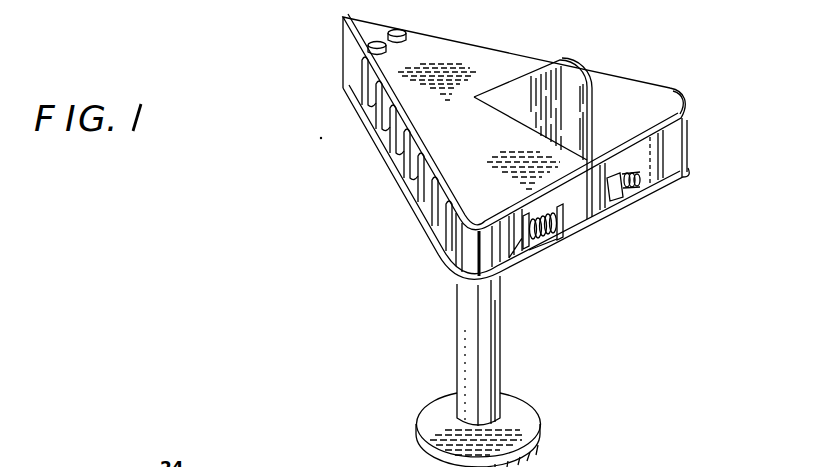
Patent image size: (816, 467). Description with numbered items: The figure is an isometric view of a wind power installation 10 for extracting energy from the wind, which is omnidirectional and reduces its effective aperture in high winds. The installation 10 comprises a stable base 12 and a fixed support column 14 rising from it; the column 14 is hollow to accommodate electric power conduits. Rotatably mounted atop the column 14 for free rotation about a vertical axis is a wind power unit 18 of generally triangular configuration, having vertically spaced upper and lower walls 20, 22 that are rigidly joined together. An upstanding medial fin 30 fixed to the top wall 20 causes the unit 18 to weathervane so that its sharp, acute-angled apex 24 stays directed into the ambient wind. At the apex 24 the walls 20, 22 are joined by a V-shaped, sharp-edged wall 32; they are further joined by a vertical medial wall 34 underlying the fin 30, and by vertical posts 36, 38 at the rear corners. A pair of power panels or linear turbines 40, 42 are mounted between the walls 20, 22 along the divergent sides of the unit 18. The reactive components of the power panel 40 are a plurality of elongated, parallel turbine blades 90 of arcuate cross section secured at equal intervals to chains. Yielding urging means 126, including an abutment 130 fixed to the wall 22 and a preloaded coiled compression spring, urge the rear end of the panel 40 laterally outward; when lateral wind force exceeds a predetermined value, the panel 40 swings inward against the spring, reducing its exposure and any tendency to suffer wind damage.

The wind power installation 10 is at (376, 232).
The stable base 12 is at (528, 430).
The fixed support column 14 is at (497, 367).
The wind power unit 18 is at (518, 48).
The upper wall 20 is at (637, 105).
The lower wall 22 is at (641, 186).
The apex 24 is at (340, 17).
The medial fin 30 is at (570, 110).
The V shaped wall 32 is at (350, 56).
The vertical medial wall 34 is at (591, 198).
The vertical post 36 is at (462, 278).
The vertical post 38 is at (683, 153).
The power panel 40 is at (438, 222).
The power panel 42 is at (665, 125).
The turbine blades 90 is at (401, 181).
The yielding urging means 126 is at (547, 252).
The abutment 130 is at (561, 228).